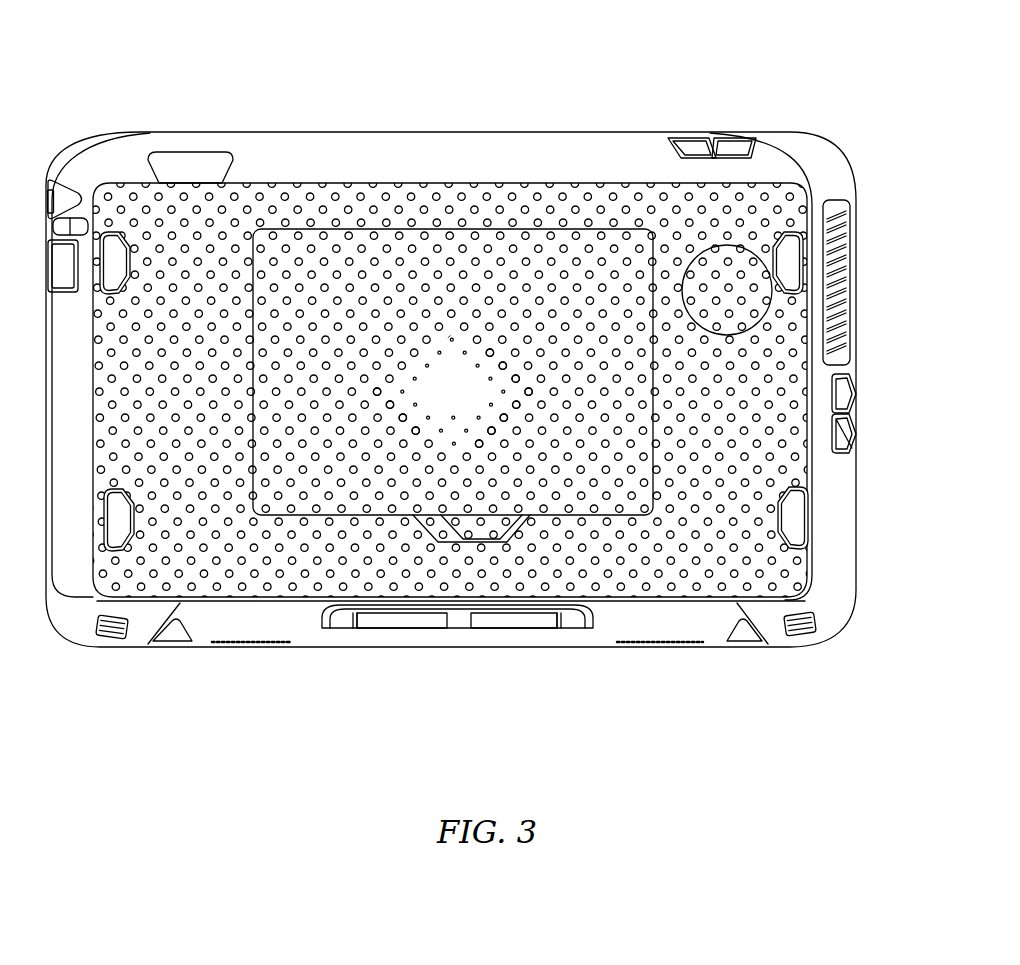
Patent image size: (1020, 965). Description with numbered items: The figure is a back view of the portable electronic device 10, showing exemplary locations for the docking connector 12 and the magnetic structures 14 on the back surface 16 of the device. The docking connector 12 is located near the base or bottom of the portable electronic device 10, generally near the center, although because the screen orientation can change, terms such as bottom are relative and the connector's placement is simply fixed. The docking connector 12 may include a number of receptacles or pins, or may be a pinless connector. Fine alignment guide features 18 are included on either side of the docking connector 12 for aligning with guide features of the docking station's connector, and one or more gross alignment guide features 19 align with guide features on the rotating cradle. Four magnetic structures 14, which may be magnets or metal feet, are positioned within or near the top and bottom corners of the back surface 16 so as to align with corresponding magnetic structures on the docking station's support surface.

The portable electronic device 10 is at (626, 40).
The docking connector 12 is at (418, 630).
The magnetic structure 14 is at (117, 227).
The back surface 16 is at (386, 226).
The fine alignment guide feature 18 is at (339, 630).
The gross alignment guide feature 19 is at (170, 644).